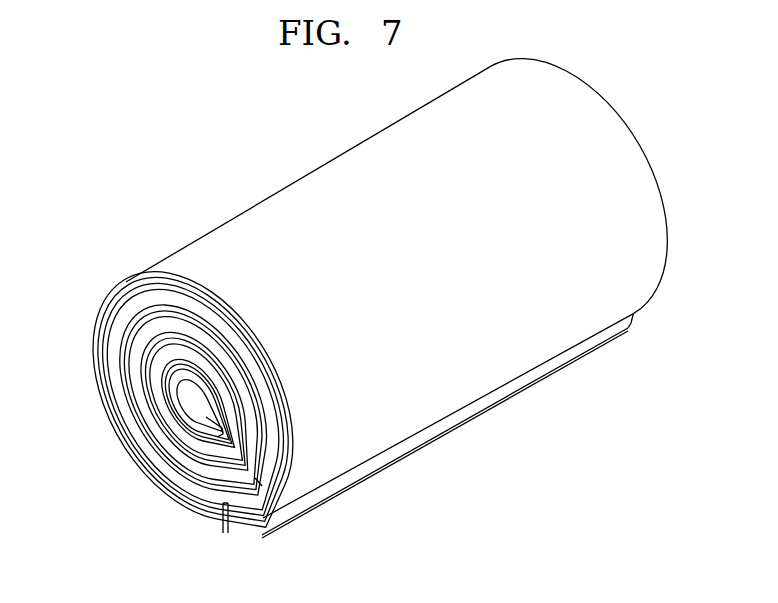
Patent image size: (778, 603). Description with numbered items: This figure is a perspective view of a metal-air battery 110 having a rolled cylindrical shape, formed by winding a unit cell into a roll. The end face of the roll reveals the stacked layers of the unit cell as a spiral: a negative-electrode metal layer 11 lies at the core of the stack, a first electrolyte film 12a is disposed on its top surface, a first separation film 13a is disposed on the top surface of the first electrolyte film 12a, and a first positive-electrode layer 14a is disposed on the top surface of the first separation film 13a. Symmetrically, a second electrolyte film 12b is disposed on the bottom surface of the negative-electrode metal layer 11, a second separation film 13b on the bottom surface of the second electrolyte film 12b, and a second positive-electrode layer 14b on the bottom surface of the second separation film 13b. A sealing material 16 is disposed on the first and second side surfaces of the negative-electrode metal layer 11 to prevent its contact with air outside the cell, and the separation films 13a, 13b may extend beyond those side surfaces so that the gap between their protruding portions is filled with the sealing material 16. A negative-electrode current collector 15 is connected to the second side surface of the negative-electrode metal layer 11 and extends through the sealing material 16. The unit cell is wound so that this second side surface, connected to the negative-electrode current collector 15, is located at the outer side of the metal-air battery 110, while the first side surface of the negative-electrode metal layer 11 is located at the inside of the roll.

The negative-electrode metal layer 11 is at (213, 511).
The first electrolyte film 12a is at (121, 424).
The second electrolyte film 12b is at (172, 499).
The first separation film 13a is at (118, 406).
The second separation film 13b is at (146, 472).
The first positive-electrode layer 14a is at (118, 383).
The second positive-electrode layer 14b is at (131, 453).
The negative-electrode current collector 15 is at (334, 487).
The sealing material 16 is at (224, 535).
The metal-air battery 110 is at (482, 416).